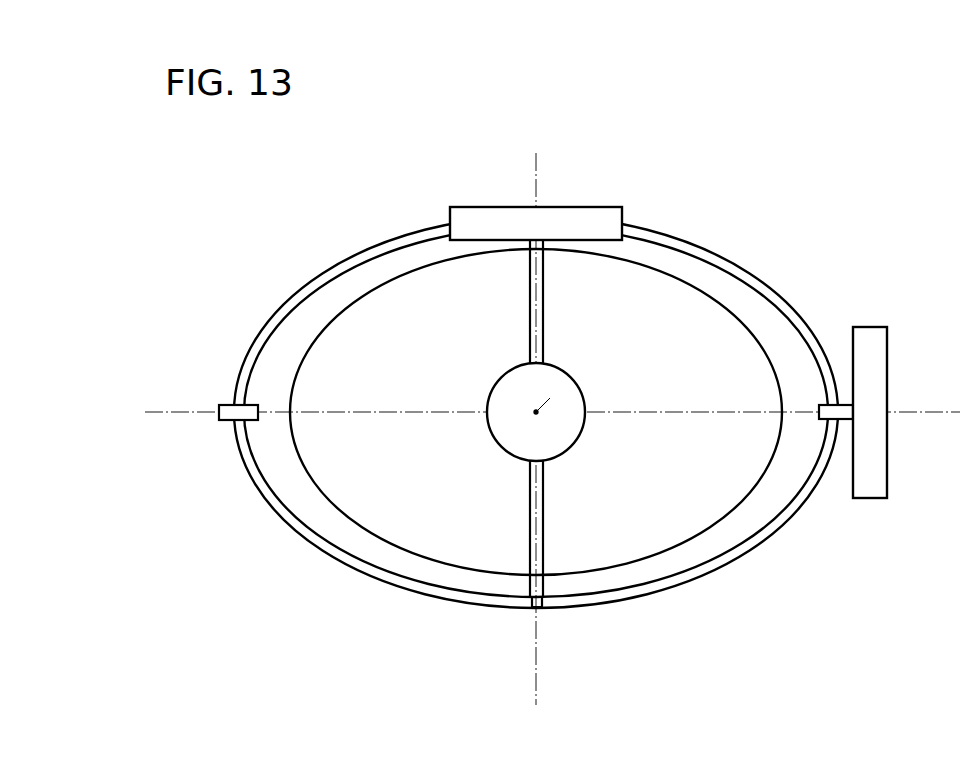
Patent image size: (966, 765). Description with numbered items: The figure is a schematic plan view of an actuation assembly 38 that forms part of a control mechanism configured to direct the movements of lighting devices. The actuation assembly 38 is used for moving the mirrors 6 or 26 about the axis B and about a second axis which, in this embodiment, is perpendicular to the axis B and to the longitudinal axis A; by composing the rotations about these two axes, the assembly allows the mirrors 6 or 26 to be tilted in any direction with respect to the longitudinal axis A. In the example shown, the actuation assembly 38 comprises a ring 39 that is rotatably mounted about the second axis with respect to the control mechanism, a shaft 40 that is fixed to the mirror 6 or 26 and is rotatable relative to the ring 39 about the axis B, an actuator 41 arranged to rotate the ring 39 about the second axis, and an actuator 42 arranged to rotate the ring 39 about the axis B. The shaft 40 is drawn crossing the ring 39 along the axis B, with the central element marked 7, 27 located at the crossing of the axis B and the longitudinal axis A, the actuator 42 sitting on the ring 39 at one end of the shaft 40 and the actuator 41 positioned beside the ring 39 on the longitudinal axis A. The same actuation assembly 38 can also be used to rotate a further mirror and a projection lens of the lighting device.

The actuation assembly 38 is at (557, 365).
The ring 39 is at (832, 202).
The shaft 40 is at (535, 540).
The actuator 41 is at (875, 345).
The actuator 42 is at (478, 205).
The mirror 6 is at (559, 431).
The mirror 26 is at (703, 513).
The hub 7 is at (567, 441).
The hub 27 is at (563, 428).
The longitudinal axis A is at (536, 412).
The axis B is at (540, 170).